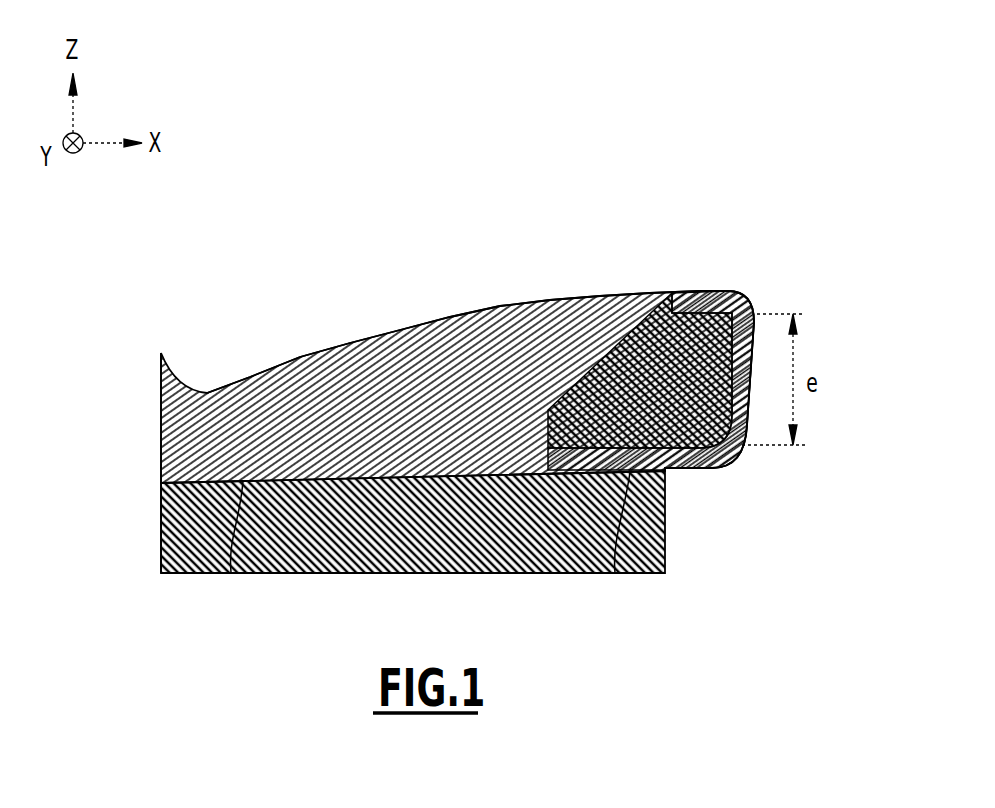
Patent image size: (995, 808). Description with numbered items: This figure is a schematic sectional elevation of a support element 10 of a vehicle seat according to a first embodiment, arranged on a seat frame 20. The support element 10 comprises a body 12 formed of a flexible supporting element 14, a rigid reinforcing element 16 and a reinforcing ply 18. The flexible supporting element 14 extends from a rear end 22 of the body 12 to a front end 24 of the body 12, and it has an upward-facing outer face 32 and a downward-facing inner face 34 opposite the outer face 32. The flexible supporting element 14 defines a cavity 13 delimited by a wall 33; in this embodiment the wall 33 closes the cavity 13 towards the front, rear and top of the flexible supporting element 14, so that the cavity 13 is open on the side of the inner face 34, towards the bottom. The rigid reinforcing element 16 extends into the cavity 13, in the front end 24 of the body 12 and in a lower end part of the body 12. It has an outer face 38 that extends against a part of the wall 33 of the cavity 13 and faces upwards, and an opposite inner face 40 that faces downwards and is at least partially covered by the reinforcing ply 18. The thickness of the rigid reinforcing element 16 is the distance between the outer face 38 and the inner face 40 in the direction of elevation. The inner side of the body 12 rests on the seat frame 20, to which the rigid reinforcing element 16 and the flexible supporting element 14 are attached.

The support element 10 is at (448, 315).
The body 12 is at (509, 341).
The cavity 13 is at (722, 297).
The flexible supporting element 14 is at (412, 348).
The rigid reinforcing element 16 is at (752, 385).
The reinforcing ply 18 is at (681, 470).
The seat frame 20 is at (352, 488).
The rear end 22 is at (145, 502).
The front end 24 is at (745, 472).
The outer face 32 is at (535, 302).
The wall 33 is at (738, 305).
The inner face 34 is at (231, 572).
The outer face 38 is at (678, 292).
The inner face 40 is at (615, 573).